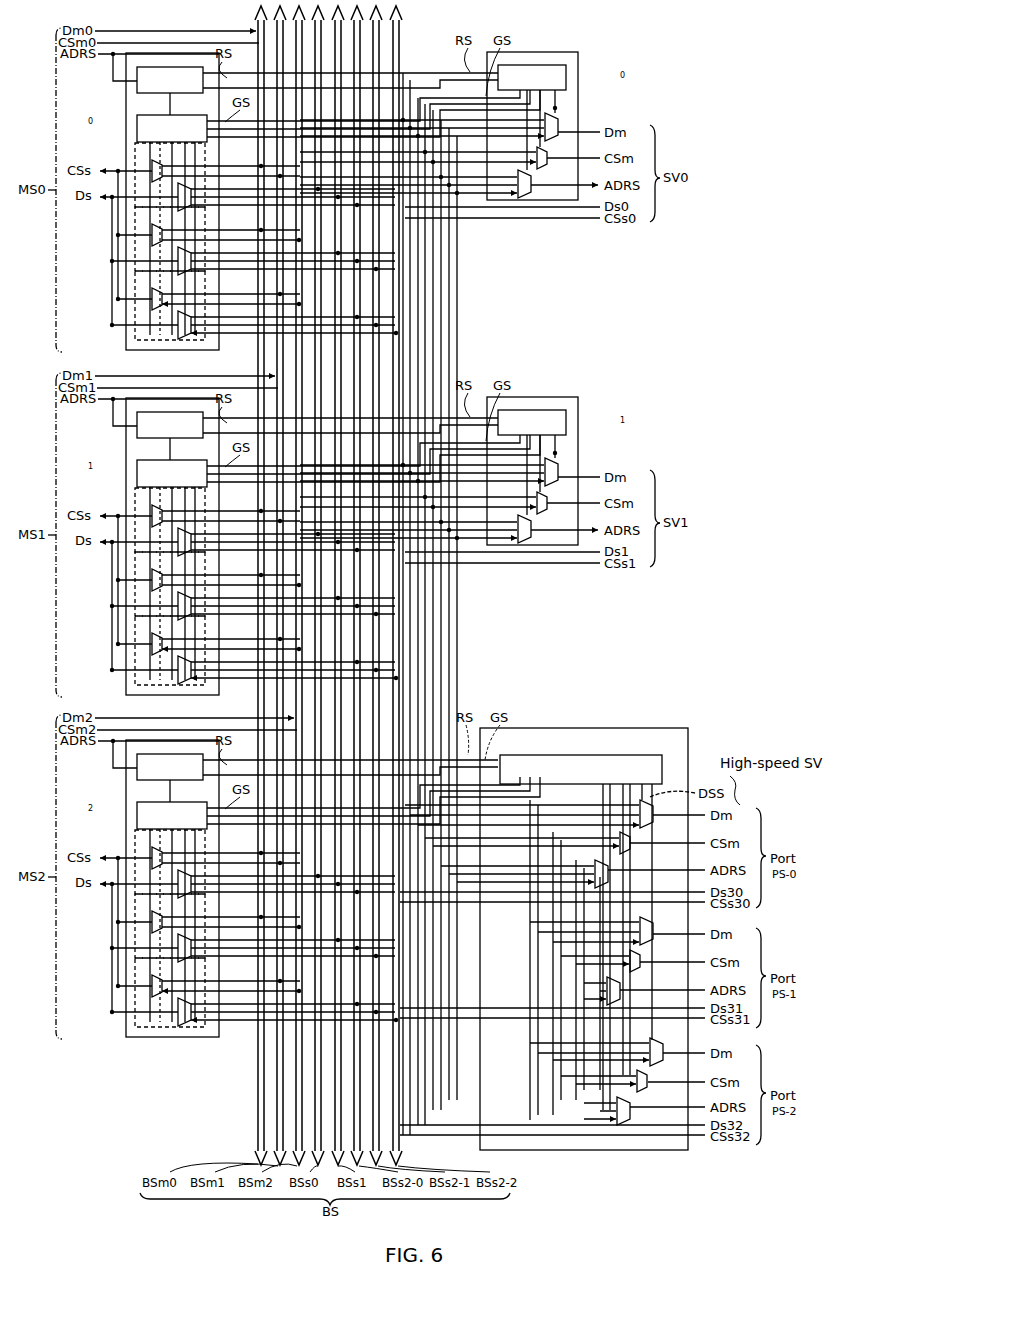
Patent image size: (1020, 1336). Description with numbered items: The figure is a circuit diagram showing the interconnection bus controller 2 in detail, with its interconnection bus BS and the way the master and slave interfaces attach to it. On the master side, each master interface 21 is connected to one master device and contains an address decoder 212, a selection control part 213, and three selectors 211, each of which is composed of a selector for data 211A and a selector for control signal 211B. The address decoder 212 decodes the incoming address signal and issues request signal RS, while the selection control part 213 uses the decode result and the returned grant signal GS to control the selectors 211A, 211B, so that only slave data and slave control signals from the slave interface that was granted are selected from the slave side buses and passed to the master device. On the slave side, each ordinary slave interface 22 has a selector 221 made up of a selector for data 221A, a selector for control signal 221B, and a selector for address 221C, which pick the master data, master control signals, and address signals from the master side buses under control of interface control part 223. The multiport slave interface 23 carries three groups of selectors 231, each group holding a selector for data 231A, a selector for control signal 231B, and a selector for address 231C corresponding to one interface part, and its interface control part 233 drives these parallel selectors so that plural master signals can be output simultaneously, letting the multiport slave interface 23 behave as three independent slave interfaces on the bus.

The interconnection bus controller 2 is at (166, 20).
The master interface 21 is at (126, 120).
The selector 211 is at (135, 273).
The selector for data 211A is at (178, 320).
The selector for control signal 211B is at (152, 296).
The address decoder 212 is at (137, 88).
The selection control part 213 is at (172, 114).
The slave interface 22 is at (580, 63).
The selector 221 is at (465, 191).
The selector for data 221A is at (552, 142).
The selector for control signal 221B is at (543, 169).
The selector for address 221C is at (415, 206).
The interface control part 223 is at (546, 65).
The multiport slave interface 23 is at (680, 728).
The selector 231 is at (550, 1008).
The selector for data 231A is at (657, 1066).
The selector for control signal 231B is at (642, 1088).
The selector for address 231C is at (535, 1025).
The interface control part 233 is at (648, 755).